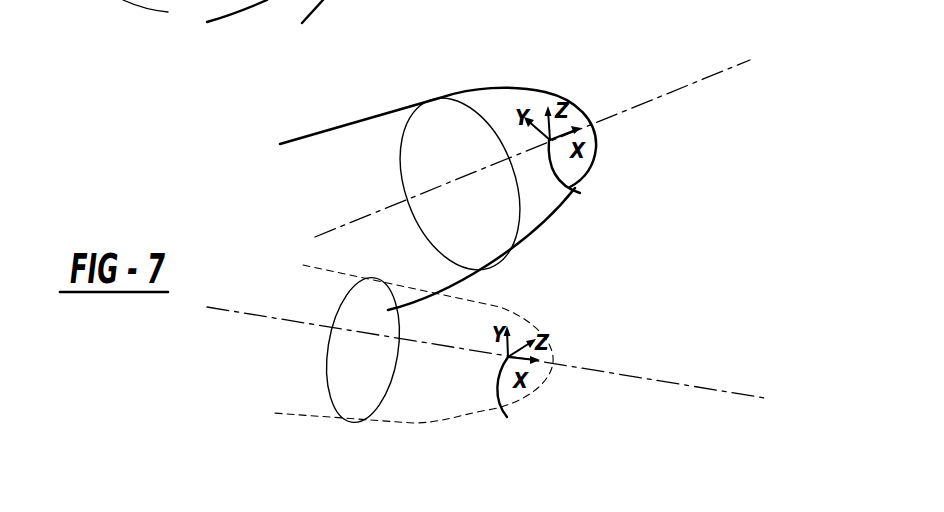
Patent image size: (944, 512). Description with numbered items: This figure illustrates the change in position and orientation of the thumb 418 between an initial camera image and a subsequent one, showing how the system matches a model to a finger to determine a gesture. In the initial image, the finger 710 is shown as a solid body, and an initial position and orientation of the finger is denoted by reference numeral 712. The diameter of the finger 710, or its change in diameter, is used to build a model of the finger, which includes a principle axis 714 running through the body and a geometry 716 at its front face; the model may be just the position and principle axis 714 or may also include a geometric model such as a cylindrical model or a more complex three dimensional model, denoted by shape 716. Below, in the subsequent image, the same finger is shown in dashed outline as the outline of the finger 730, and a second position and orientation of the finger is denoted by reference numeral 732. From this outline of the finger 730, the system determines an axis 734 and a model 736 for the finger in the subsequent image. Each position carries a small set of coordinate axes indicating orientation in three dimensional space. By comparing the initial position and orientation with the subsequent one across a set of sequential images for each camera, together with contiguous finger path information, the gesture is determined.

The thumb 418 is at (493, 84).
The finger 710 is at (533, 90).
The initial position and orientation of a finger 712 is at (580, 193).
The principle axis 714 is at (668, 93).
The geometry 716 is at (398, 153).
The outline of the finger 730 is at (503, 308).
The second position and orientation of the finger 732 is at (507, 417).
The axis 734 is at (680, 383).
The model 736 is at (325, 360).